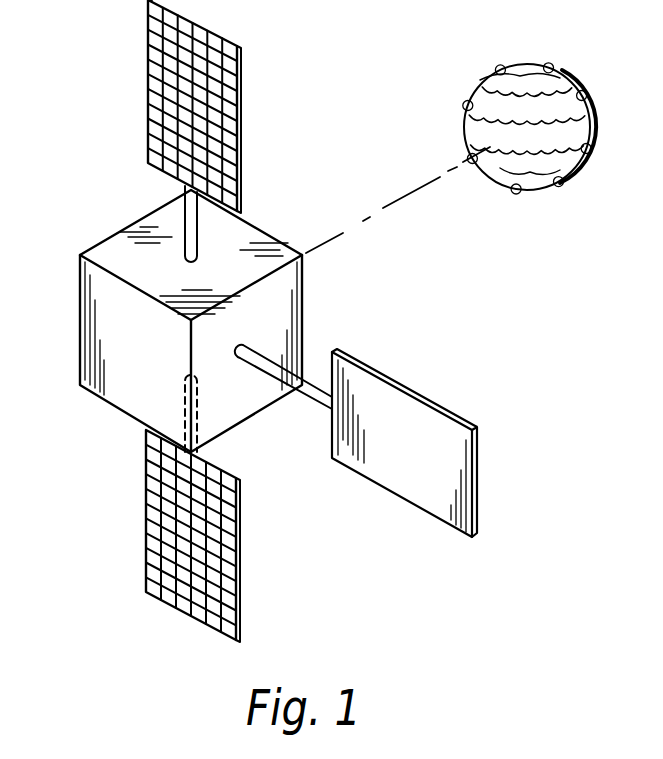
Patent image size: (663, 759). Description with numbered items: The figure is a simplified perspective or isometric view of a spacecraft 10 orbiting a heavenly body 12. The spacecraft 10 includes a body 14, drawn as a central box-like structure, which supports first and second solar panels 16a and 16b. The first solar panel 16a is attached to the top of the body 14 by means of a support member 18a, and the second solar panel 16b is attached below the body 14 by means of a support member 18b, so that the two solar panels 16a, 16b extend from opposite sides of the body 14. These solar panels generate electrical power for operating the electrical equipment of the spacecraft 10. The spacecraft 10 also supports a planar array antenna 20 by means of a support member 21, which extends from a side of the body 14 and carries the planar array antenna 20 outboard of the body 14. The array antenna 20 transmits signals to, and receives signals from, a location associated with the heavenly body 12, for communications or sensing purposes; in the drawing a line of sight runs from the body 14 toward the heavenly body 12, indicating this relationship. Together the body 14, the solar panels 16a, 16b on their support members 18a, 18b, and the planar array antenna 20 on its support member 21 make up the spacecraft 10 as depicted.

The spacecraft 10 is at (311, 142).
The heavenly body 12 is at (533, 192).
The body 14 is at (80, 315).
The first solar panel 16a is at (148, 117).
The second solar panel 16b is at (146, 522).
The support member 18a is at (185, 205).
The support member 18b is at (199, 412).
The planar array antenna 20 is at (381, 487).
The support member 21 is at (312, 378).